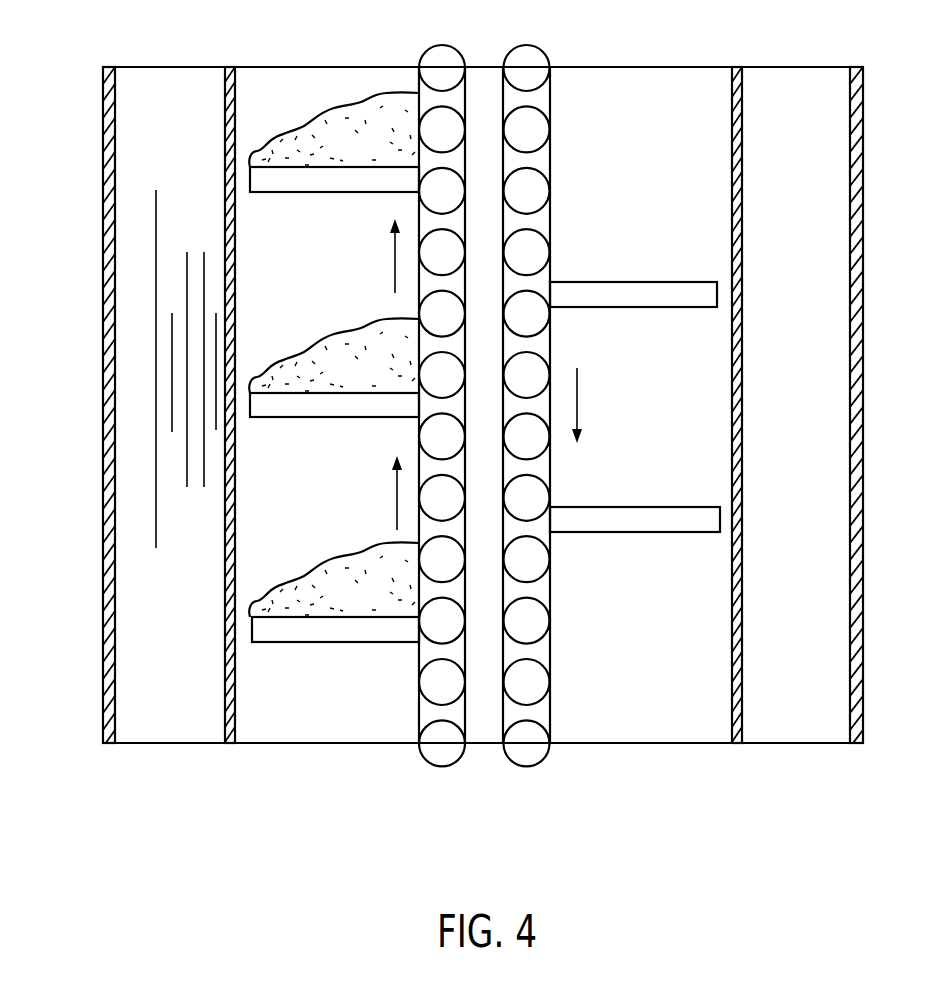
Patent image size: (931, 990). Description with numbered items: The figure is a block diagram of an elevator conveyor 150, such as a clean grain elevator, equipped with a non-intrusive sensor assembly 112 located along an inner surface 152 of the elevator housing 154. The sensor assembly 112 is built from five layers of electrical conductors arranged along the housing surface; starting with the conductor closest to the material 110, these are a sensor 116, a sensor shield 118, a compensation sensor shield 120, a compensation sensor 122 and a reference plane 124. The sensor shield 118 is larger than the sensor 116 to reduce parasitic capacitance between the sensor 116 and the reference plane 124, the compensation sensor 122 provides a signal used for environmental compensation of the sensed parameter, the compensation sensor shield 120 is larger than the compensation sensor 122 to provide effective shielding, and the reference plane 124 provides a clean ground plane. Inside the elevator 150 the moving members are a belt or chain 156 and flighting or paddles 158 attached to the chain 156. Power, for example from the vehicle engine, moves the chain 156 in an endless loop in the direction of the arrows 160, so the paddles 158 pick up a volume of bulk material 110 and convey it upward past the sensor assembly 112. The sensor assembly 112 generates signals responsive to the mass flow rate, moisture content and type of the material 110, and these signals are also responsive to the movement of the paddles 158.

The material 110 is at (334, 152).
The sensor assembly 112 is at (92, 233).
The sensor 116 is at (216, 328).
The sensor shield 118 is at (204, 349).
The compensation sensor shield 120 is at (187, 387).
The compensation sensor 122 is at (172, 422).
The reference plane 124 is at (156, 516).
The elevator conveyor 150 is at (325, 67).
The inner surface 152 is at (107, 684).
The elevator housing 154 is at (103, 653).
The chain 156 is at (448, 746).
The paddles 158 is at (336, 193).
The arrows 160 is at (395, 262).